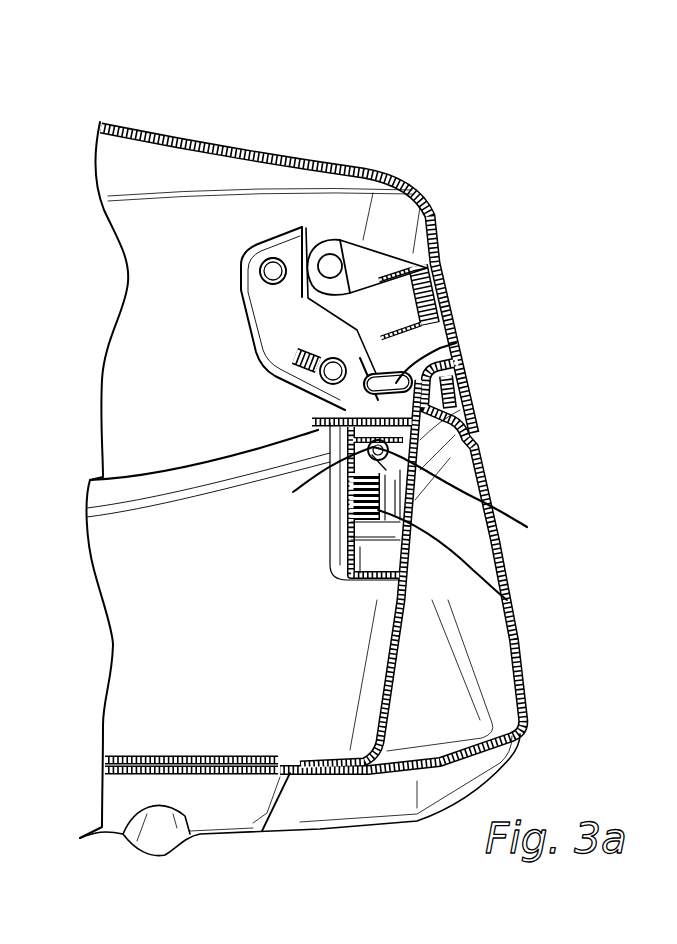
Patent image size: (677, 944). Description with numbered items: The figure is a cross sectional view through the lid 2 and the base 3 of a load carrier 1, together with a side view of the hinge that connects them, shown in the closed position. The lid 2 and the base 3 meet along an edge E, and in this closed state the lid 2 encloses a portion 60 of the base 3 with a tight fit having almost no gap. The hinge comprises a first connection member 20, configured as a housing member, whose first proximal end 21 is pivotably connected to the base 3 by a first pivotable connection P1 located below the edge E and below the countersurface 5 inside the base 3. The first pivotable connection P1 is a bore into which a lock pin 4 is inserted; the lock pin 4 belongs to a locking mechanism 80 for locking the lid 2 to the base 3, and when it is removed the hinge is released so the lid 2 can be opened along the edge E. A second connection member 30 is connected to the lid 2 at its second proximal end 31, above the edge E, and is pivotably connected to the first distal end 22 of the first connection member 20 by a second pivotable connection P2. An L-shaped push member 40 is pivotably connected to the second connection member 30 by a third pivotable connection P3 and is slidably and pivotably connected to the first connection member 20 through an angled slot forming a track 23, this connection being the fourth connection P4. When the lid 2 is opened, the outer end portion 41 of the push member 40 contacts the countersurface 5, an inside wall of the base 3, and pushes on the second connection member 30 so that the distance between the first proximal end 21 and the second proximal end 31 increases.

The load carrier 1 is at (428, 150).
The lid 2 is at (440, 242).
The base 3 is at (523, 681).
The lock pin 4 is at (473, 497).
The countersurface 5 is at (470, 358).
The first connection member 20 is at (256, 350).
The first proximal end 21 is at (293, 492).
The first distal end 22 is at (242, 272).
The track 23 is at (268, 373).
The second connection member 30 is at (387, 247).
The second proximal end 31 is at (452, 291).
The push member 40 is at (426, 363).
The outer end portion 41 is at (400, 382).
The portion 60 is at (473, 396).
The locking mechanism 80 is at (506, 599).
The edge E is at (494, 440).
The first pivotable connection P1 is at (372, 452).
The second pivotable connection P2 is at (266, 257).
The third pivotable connection P3 is at (327, 252).
The fourth connection P4 is at (325, 377).